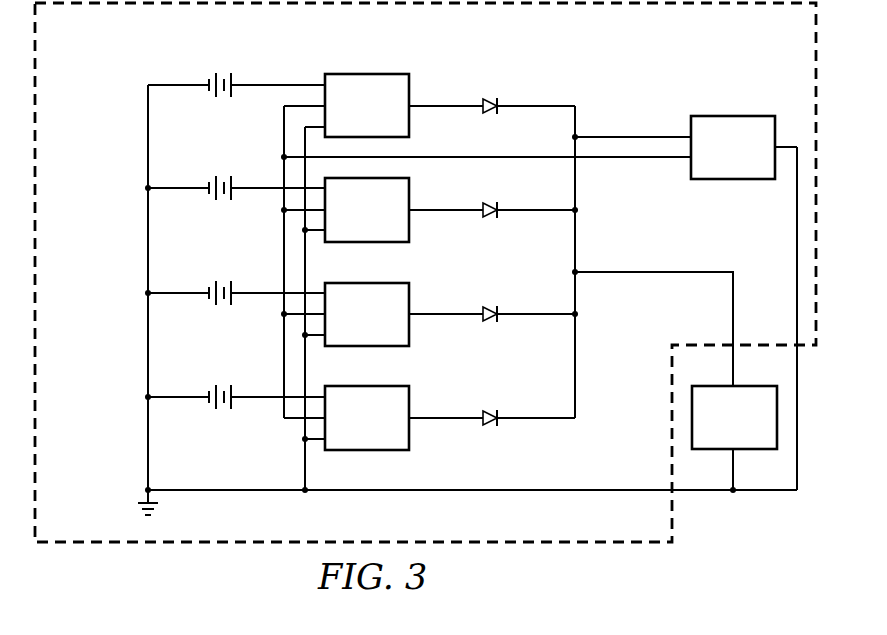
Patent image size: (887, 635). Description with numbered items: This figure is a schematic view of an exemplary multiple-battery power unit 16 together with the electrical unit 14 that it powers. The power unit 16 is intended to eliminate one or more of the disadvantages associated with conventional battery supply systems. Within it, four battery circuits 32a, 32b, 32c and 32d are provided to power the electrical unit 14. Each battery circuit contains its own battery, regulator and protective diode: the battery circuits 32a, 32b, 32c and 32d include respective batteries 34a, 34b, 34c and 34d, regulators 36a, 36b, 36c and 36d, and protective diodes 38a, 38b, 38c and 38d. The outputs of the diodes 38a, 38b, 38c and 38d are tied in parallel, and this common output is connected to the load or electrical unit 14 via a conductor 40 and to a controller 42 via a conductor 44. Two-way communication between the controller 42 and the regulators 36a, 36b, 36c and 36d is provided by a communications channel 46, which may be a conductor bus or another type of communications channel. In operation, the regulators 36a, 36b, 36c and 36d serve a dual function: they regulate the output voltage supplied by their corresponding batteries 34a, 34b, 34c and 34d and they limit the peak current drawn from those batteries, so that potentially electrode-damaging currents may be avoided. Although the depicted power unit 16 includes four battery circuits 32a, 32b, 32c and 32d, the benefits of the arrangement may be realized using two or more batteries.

The electrical unit 14 is at (748, 430).
The power unit 16 is at (676, 519).
The battery circuit 32a is at (118, 58).
The battery circuit 32b is at (118, 162).
The battery circuit 32c is at (118, 315).
The battery circuit 32d is at (118, 418).
The battery 34a is at (225, 66).
The battery 34b is at (225, 169).
The battery 34c is at (225, 308).
The battery 34d is at (225, 412).
The regulator 36a is at (386, 118).
The regulator 36b is at (386, 223).
The regulator 36c is at (386, 327).
The regulator 36d is at (386, 432).
The protective diode 38a is at (494, 98).
The protective diode 38b is at (494, 218).
The protective diode 38c is at (494, 322).
The protective diode 38d is at (494, 426).
The conductor 40 is at (630, 275).
The controller 42 is at (745, 162).
The conductor 44 is at (630, 135).
The communications channel 46 is at (630, 160).